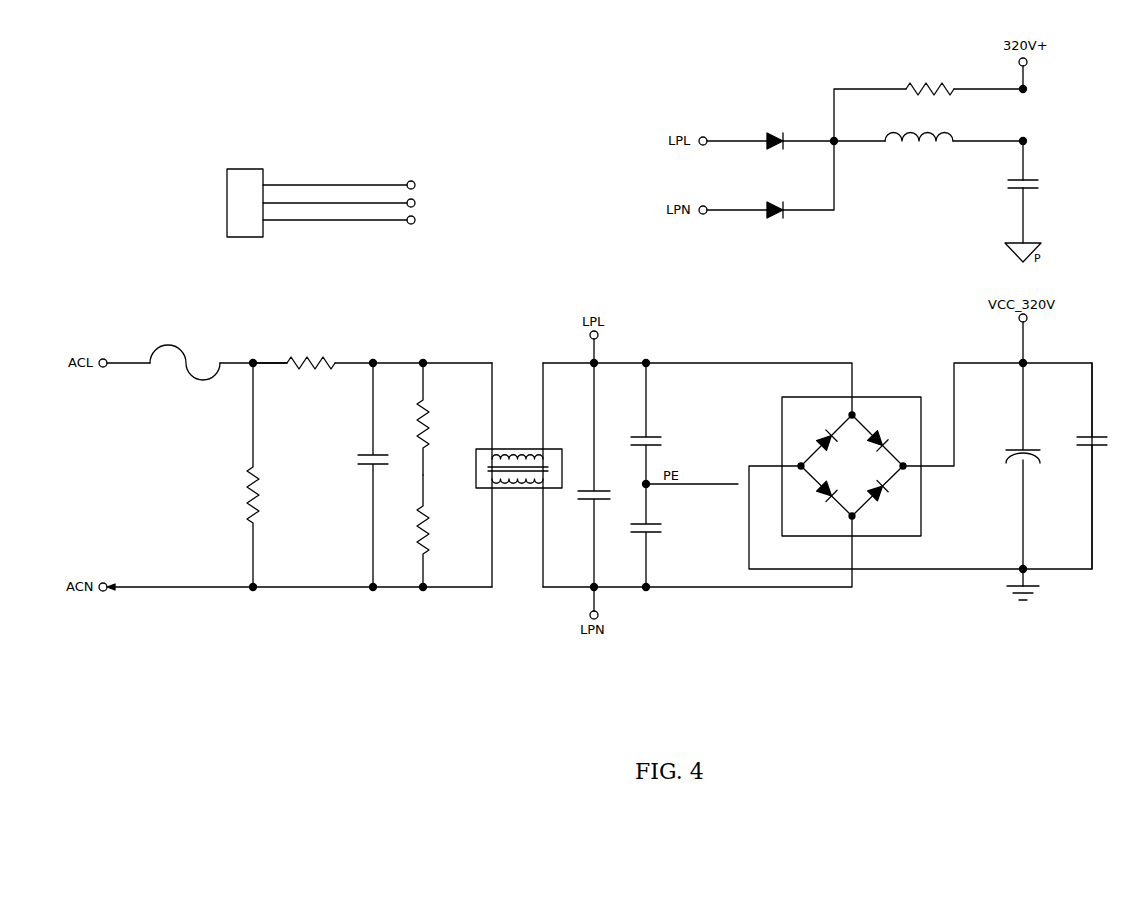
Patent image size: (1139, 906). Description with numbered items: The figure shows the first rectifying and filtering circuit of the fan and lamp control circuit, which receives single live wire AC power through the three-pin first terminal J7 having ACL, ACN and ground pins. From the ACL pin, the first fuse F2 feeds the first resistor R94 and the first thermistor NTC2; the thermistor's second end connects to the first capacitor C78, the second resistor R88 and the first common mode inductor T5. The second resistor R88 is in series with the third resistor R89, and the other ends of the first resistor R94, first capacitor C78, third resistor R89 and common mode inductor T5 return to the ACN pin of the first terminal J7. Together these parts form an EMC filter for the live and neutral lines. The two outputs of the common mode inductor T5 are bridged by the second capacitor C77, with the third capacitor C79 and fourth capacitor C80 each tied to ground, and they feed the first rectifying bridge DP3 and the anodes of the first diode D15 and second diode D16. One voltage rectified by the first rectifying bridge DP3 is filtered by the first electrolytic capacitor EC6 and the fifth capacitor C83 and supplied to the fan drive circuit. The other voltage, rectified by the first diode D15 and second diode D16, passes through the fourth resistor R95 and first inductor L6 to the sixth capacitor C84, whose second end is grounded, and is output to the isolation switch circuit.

The first fuse F2 is at (182, 367).
The first thermistor NTC2 is at (294, 376).
The first resistor R94 is at (248, 475).
The first capacitor C78 is at (372, 475).
The second resistor R88 is at (441, 419).
The third resistor R89 is at (441, 531).
The first common mode inductor T5 is at (518, 475).
The second capacitor C77 is at (593, 475).
The third capacitor C79 is at (659, 423).
The fourth capacitor C80 is at (659, 535).
The first rectifying bridge DP3 is at (849, 467).
The first electrolytic capacitor EC6 is at (1023, 466).
The fifth capacitor C83 is at (1091, 466).
The first diode D15 is at (768, 141).
The second diode D16 is at (768, 210).
The fourth resistor R95 is at (911, 75).
The first inductor L6 is at (910, 133).
The sixth capacitor C84 is at (996, 195).
The first terminal J7 is at (335, 220).